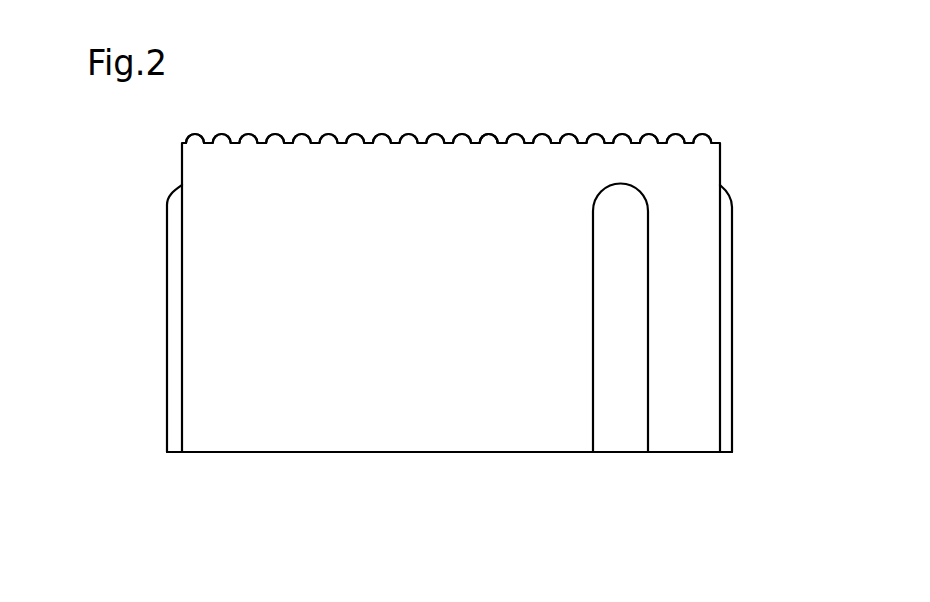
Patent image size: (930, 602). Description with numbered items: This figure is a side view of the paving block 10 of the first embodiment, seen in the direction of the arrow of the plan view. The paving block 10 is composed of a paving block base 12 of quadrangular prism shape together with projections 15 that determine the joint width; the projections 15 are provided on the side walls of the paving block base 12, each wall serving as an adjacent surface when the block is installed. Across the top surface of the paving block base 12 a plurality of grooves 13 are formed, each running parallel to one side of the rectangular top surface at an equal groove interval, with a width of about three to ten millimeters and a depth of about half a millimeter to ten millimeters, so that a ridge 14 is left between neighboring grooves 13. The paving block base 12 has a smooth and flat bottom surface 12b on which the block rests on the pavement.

The paving block 10 is at (707, 122).
The paving block base 12 is at (573, 268).
The bottom surface 12b is at (508, 458).
The grooves 13 is at (424, 141).
The ridge 14 is at (490, 134).
The projections 15 is at (172, 363).